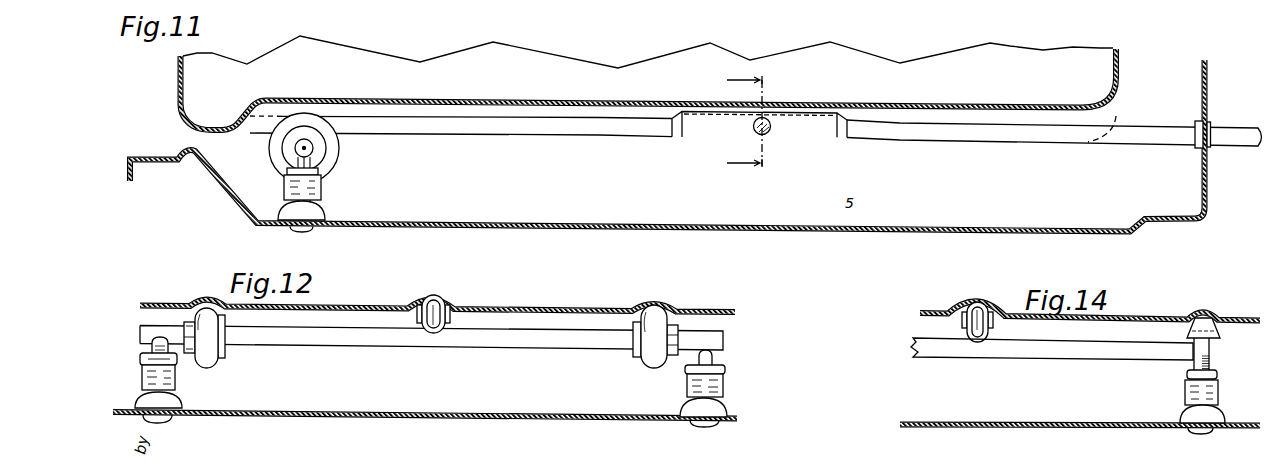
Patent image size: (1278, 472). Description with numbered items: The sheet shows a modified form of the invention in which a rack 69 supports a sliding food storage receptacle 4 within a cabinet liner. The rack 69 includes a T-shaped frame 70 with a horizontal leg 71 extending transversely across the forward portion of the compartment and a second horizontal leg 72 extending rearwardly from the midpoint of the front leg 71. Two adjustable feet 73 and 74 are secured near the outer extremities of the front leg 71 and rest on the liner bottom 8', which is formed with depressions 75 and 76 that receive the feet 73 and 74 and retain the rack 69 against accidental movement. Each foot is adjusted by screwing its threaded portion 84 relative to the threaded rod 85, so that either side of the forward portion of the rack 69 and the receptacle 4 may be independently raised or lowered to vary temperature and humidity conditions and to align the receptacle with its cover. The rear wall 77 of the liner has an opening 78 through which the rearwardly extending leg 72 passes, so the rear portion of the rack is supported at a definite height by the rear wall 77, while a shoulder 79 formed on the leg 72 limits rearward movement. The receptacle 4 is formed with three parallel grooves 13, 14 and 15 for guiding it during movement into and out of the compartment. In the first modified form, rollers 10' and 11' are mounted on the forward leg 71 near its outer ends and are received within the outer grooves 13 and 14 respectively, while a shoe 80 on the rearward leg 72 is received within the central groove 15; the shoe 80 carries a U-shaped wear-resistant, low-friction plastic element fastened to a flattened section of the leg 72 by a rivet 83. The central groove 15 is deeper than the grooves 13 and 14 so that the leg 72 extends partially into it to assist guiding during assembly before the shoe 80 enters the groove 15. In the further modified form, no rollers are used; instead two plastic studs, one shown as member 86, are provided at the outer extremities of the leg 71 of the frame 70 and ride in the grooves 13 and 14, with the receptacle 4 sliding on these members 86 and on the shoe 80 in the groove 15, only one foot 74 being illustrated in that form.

In FIG. 11, the food storage receptacle 4 is at (1120, 66).
In FIG. 11, the liner bottom 8' is at (667, 146).
In FIG. 12, the liner bottom 8' is at (425, 402).
In FIG. 14, the liner bottom 8' is at (1080, 407).
In FIG. 12, the roller 10' is at (222, 343).
In FIG. 11, the roller 11' is at (318, 172).
In FIG. 12, the roller 11' is at (656, 354).
In FIG. 11, the groove 13 is at (736, 122).
In FIG. 12, the groove 13 is at (207, 301).
In FIG. 12, the groove 14 is at (663, 306).
In FIG. 14, the groove 14 is at (1204, 311).
In FIG. 12, the central groove 15 is at (447, 300).
In FIG. 14, the central groove 15 is at (982, 300).
In FIG. 11, the rack 69 is at (572, 129).
In FIG. 12, the T-shaped frame 70 is at (403, 341).
In FIG. 12, the horizontal leg 71 is at (568, 339).
In FIG. 14, the horizontal leg 71 is at (1035, 353).
In FIG. 11, the second horizontal leg 72 is at (940, 131).
In FIG. 12, the second horizontal leg 72 is at (436, 328).
In FIG. 14, the second horizontal leg 72 is at (981, 341).
In FIG. 12, the foot 73 is at (178, 380).
In FIG. 12, the foot 74 is at (724, 387).
In FIG. 12, the depression 75 is at (172, 421).
In FIG. 12, the depression 76 is at (703, 428).
In FIG. 14, the depression 76 is at (1203, 434).
In FIG. 11, the rear wall 77 is at (1202, 87).
In FIG. 11, the opening 78 is at (1212, 126).
In FIG. 11, the shoulder 79 is at (1198, 121).
In FIG. 11, the shoe 80 is at (808, 127).
In FIG. 12, the shoe 80 is at (428, 299).
In FIG. 14, the shoe 80 is at (972, 304).
In FIG. 11, the rivet 83 is at (766, 132).
In FIG. 12, the threaded portion 84 is at (142, 375).
In FIG. 12, the rod 85 is at (148, 343).
In FIG. 14, the member 86 is at (1221, 337).